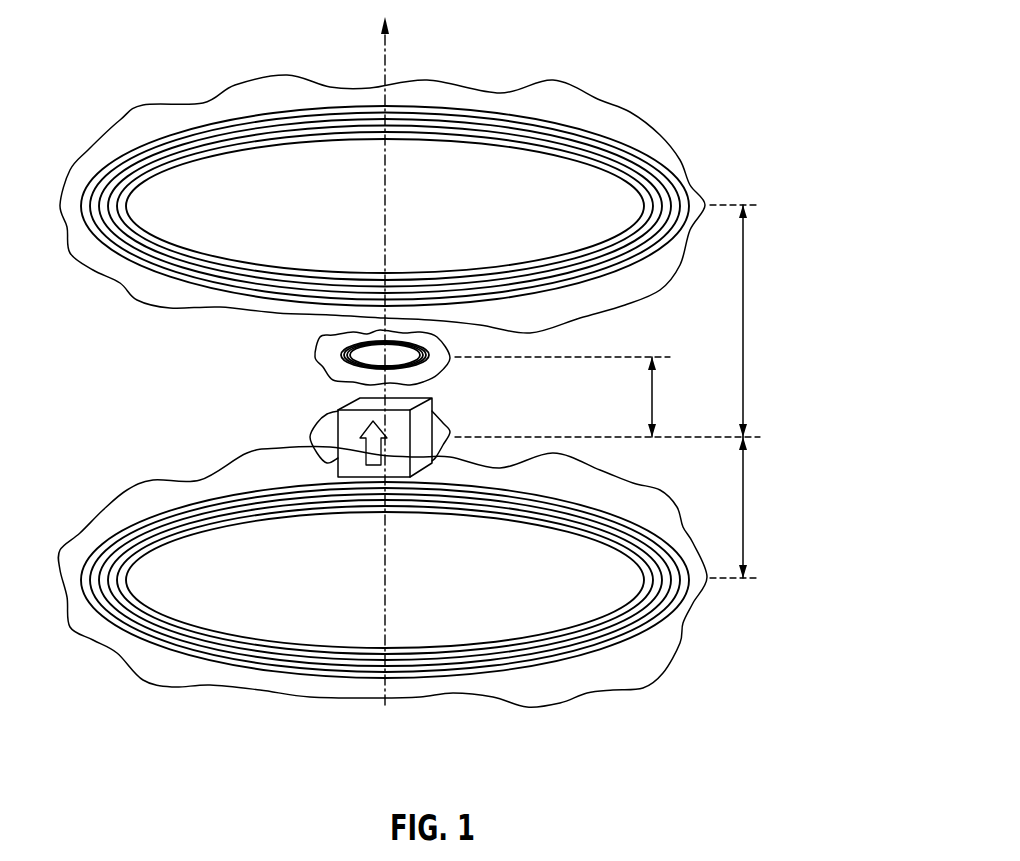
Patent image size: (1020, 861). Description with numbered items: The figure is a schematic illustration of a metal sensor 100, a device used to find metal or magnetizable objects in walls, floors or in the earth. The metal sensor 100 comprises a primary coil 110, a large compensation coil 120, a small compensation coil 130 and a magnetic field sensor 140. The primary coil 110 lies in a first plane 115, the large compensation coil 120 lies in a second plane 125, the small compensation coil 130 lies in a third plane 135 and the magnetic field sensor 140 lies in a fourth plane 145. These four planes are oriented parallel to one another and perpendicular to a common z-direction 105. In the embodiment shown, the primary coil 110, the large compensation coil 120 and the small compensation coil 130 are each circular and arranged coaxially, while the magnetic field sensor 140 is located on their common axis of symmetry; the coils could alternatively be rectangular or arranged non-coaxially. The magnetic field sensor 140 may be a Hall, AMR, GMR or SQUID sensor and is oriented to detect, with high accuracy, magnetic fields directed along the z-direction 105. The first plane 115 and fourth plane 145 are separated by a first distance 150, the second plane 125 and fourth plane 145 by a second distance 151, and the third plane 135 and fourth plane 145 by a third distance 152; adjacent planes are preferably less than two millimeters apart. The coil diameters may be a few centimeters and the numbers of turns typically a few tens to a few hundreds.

The metal sensor 100 is at (661, 84).
The z-direction 105 is at (386, 53).
The primary coil 110 is at (428, 678).
The first plane 115 is at (640, 690).
The large compensation coil 120 is at (194, 284).
The second plane 125 is at (128, 297).
The small compensation coil 130 is at (420, 371).
The third plane 135 is at (318, 346).
The magnetic field sensor 140 is at (366, 403).
The fourth plane 145 is at (312, 421).
The first distance 150 is at (743, 508).
The second distance 151 is at (743, 320).
The third distance 152 is at (652, 395).